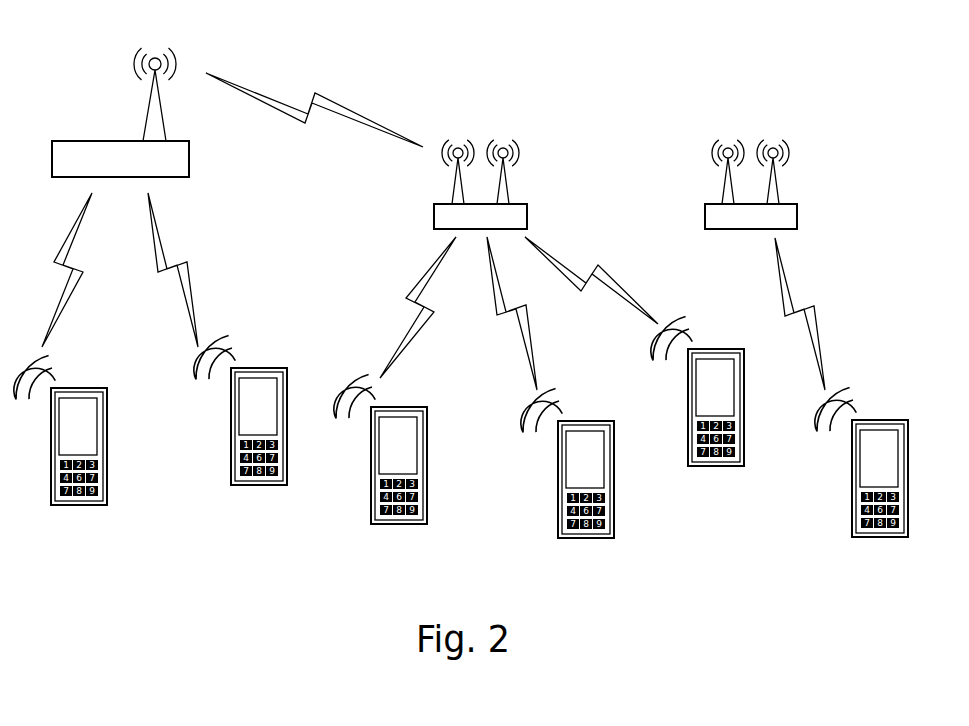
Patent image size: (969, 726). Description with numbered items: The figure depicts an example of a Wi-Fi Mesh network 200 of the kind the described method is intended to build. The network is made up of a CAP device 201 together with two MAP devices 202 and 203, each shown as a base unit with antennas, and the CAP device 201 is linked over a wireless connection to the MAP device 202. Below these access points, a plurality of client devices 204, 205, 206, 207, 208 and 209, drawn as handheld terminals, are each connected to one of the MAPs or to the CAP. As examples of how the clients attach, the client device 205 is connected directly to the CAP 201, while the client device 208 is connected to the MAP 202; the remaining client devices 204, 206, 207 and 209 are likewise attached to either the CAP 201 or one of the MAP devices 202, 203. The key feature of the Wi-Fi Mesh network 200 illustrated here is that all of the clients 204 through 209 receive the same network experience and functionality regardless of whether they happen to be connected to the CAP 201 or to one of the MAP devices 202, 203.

The Wi-Fi Mesh network 200 is at (645, 41).
The CAP device 201 is at (260, 186).
The MAP device 202 is at (452, 217).
The MAP device 203 is at (870, 186).
The client device 204 is at (176, 407).
The client device 205 is at (258, 406).
The client device 206 is at (397, 445).
The client device 207 is at (586, 457).
The client device 208 is at (716, 387).
The client device 209 is at (879, 458).